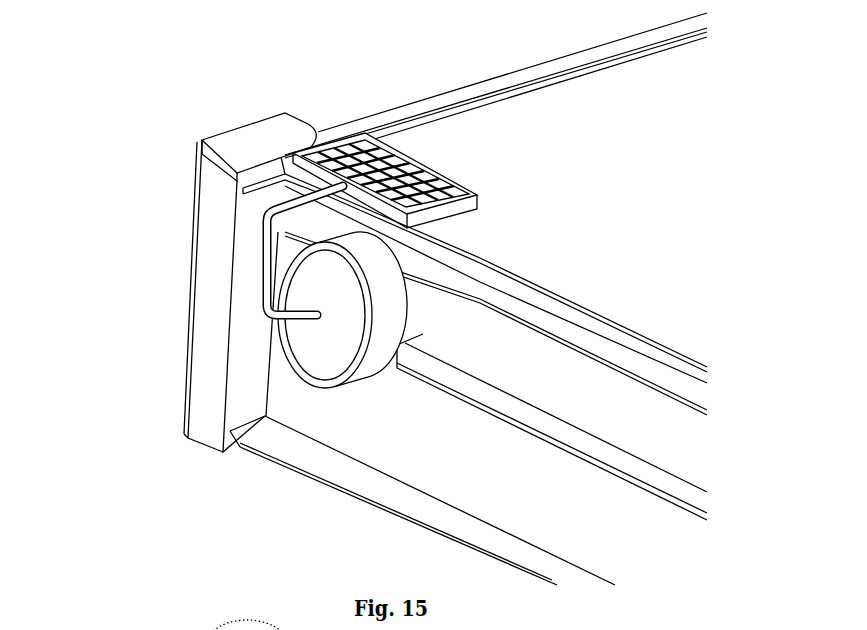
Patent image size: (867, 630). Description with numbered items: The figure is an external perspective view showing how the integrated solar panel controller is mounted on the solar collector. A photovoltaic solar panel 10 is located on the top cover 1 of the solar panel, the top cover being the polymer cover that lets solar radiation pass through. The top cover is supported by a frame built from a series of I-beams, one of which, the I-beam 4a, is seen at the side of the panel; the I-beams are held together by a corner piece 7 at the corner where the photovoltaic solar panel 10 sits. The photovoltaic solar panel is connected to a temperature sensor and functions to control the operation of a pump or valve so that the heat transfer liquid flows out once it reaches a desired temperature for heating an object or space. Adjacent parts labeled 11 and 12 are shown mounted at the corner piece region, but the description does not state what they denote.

The top cover 1 is at (475, 266).
The I-beam 4a is at (230, 431).
The corner piece 7 is at (243, 132).
The photovoltaic solar panel 10 is at (370, 127).
The hook rod 11 is at (258, 232).
The roller disc 12 is at (310, 285).